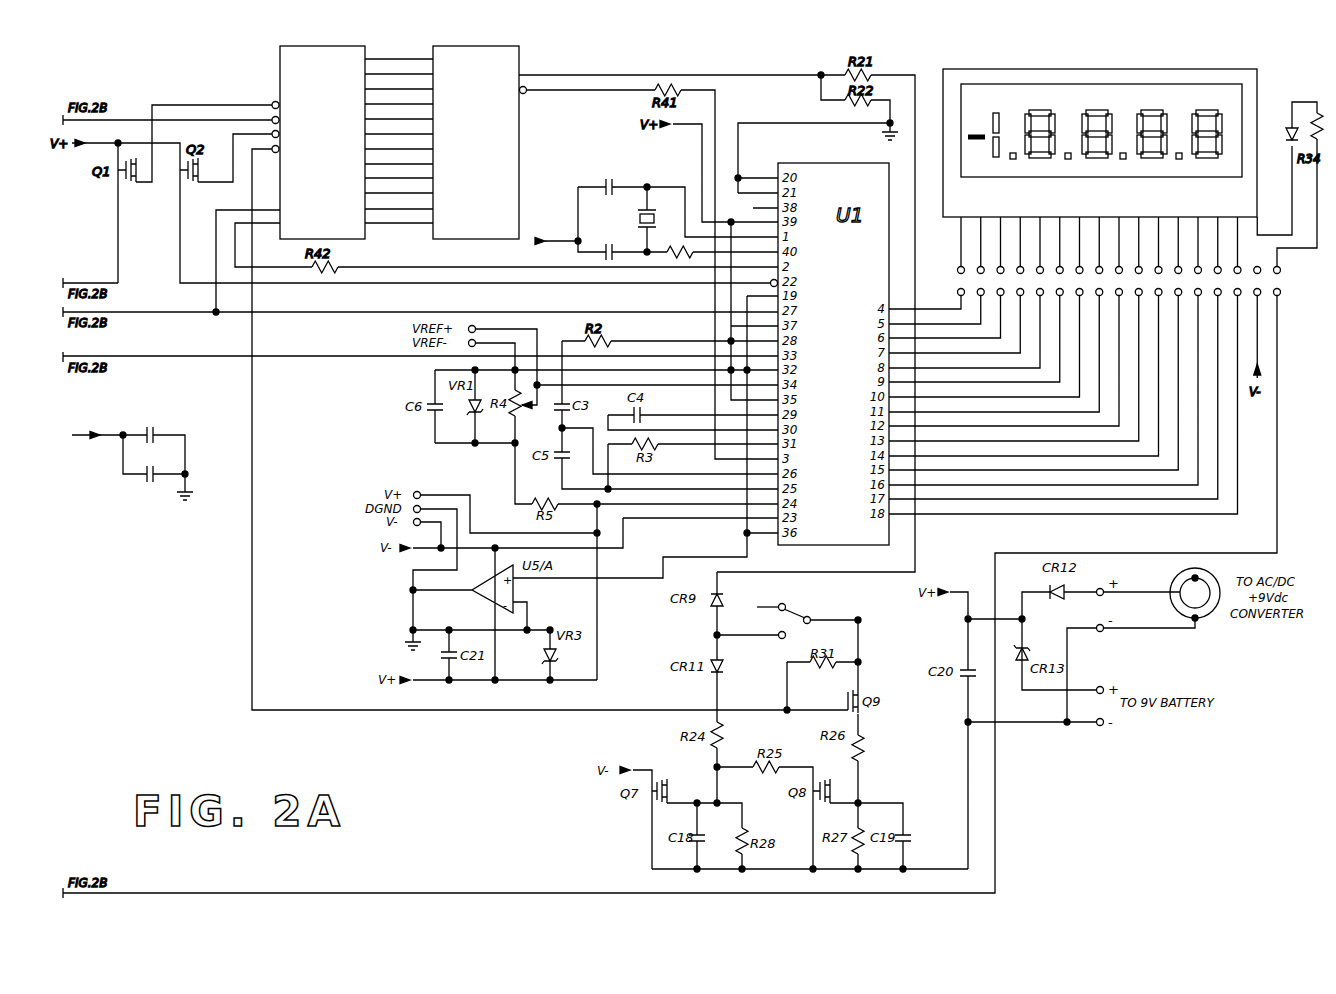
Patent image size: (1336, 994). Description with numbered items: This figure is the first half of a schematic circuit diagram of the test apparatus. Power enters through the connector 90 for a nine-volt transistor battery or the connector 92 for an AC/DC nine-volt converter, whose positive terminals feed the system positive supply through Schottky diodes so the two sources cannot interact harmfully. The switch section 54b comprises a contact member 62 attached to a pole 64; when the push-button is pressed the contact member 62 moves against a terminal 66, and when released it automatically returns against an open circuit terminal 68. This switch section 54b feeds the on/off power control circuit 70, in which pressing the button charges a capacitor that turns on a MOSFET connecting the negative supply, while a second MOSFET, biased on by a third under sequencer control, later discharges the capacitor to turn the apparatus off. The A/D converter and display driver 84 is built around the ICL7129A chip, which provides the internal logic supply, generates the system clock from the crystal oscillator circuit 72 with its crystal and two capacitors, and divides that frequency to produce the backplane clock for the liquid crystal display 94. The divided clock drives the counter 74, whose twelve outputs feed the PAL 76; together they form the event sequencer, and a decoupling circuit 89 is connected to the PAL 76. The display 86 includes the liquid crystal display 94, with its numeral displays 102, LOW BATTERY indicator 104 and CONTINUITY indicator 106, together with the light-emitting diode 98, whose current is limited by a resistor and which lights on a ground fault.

The PAL 76 is at (280, 68).
The counter 74 is at (520, 52).
The crystal oscillator circuit 72 is at (590, 178).
The display 86 is at (1100, 129).
The liquid crystal display 94 is at (971, 90).
The LOW BATTERY indicator 104 is at (1118, 92).
The CONTINUITY indicator 106 is at (1246, 90).
The numeral displays 102 is at (1235, 130).
The light-emitting diode 98 is at (1288, 142).
The A/D converter and display driver 84 is at (418, 457).
The decoupling circuit 89 is at (193, 450).
The on/off power control circuit 70 is at (645, 842).
The switch section 54b is at (801, 613).
The open circuit terminal 68 is at (780, 602).
The contact member 62 is at (780, 617).
The pole 64 is at (808, 612).
The terminal 66 is at (778, 639).
The connector 92 is at (1082, 633).
The connector 90 is at (1095, 728).